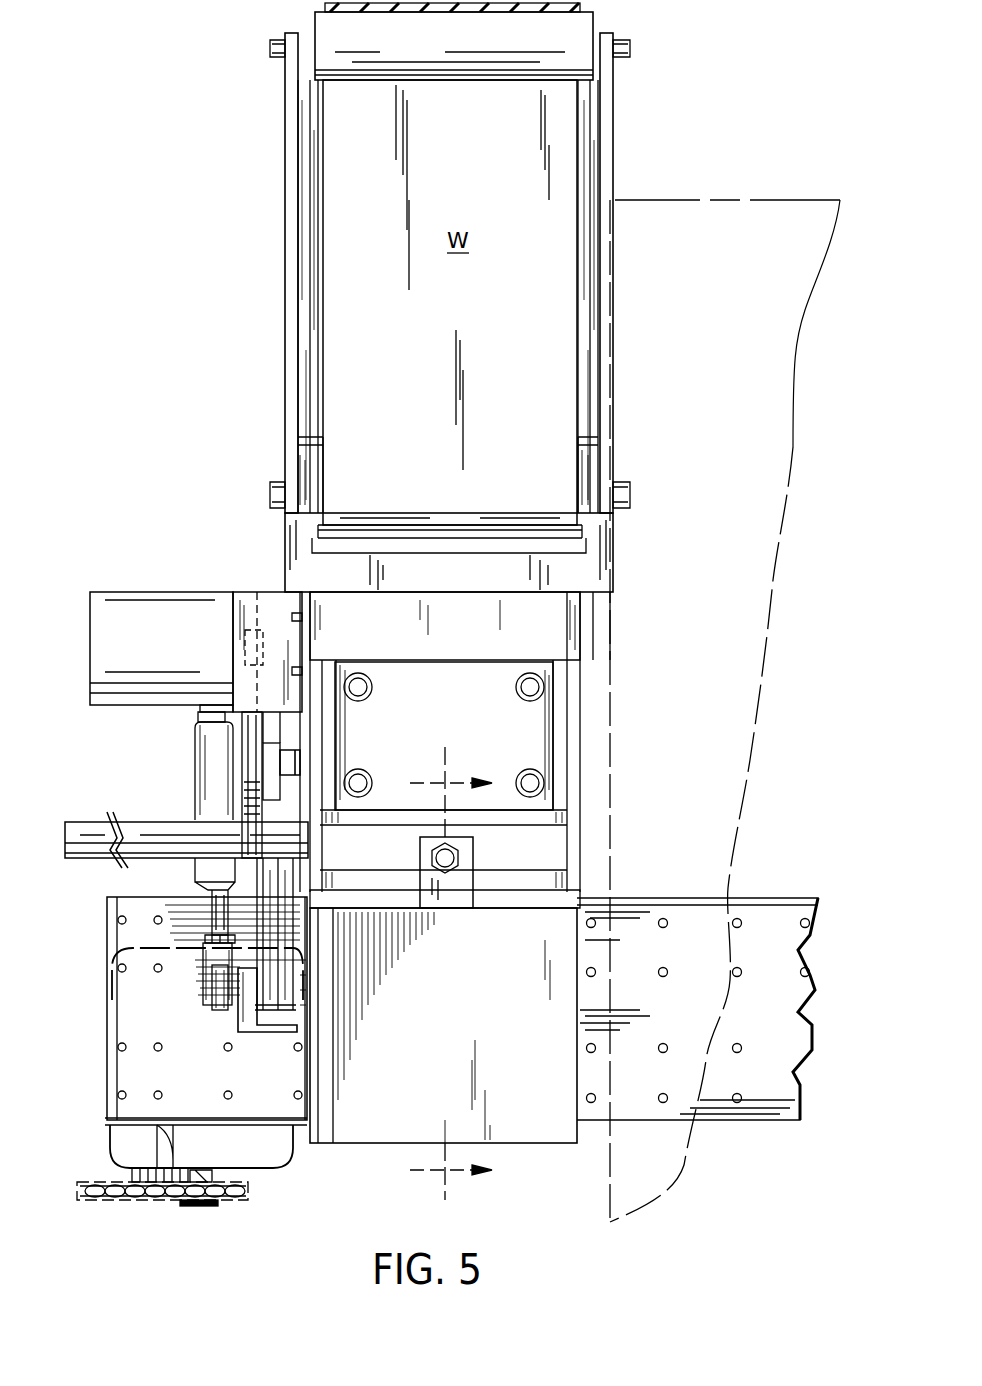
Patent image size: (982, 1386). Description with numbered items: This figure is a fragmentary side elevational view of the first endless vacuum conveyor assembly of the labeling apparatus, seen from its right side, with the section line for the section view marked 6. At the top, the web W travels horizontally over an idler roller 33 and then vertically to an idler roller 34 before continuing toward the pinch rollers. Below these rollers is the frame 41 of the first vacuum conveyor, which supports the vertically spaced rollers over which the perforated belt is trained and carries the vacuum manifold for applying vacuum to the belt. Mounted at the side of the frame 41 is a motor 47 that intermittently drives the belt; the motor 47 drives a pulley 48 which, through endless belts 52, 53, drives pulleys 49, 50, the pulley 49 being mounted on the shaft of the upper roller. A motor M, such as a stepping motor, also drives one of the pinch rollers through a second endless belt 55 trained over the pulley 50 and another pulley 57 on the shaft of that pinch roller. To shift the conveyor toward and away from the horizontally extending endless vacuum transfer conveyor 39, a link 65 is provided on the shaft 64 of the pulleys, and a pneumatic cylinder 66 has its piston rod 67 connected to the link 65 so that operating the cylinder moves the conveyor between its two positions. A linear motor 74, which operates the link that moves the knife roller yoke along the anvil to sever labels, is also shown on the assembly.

The idler roller 33 is at (578, 32).
The idler roller 34 is at (582, 470).
The frame 41 is at (285, 563).
The motor 47 is at (142, 617).
The pulley 48 is at (267, 602).
The pulley 49 is at (282, 760).
The pulley 50 is at (278, 1012).
The endless belt 52 is at (262, 740).
The endless belt 53 is at (300, 932).
The second endless belt 55 is at (224, 681).
The pulley 57 is at (267, 742).
The shaft 64 is at (237, 1014).
The link 65 is at (217, 1012).
The pneumatic cylinder 66 is at (212, 767).
The piston rod 67 is at (217, 927).
The linear motor 74 is at (86, 832).
The endless vacuum transfer conveyor 39 is at (112, 913).
The section line 6- 6 is at (451, 974).
The motor M is at (287, 1165).